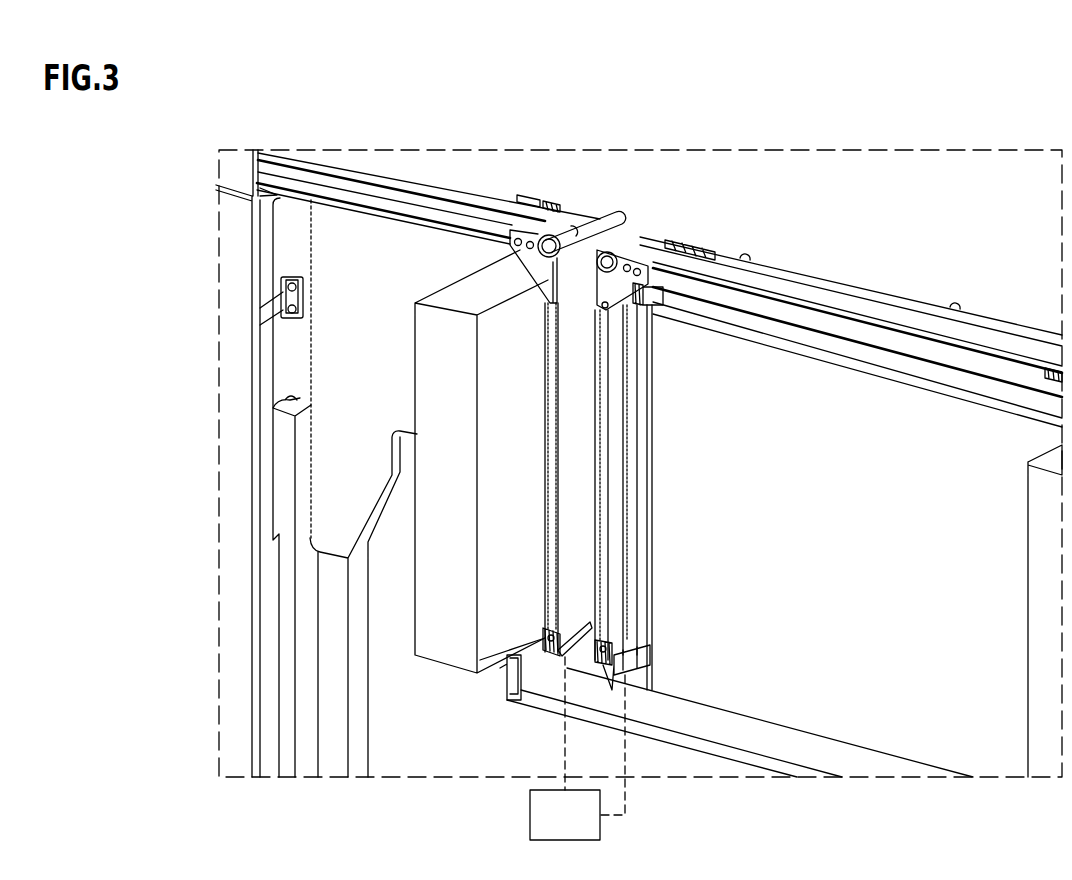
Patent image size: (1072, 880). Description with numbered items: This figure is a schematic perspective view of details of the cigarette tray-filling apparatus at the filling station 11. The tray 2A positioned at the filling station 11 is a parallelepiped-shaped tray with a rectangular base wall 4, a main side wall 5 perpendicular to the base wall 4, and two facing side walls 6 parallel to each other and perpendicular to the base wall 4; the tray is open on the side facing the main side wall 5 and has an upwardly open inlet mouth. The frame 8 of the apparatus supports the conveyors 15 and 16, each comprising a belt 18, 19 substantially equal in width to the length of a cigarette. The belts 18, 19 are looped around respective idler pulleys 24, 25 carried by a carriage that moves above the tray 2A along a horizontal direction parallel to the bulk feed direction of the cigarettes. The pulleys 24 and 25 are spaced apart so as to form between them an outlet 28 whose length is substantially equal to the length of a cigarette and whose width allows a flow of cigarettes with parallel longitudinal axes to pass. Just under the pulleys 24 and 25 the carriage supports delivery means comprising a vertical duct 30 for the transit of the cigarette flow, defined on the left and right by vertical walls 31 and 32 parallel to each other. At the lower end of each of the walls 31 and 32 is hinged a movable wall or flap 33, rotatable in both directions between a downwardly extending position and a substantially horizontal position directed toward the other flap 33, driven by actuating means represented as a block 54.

The tray at the filling station 2A is at (516, 712).
The base wall 4 is at (748, 752).
The main side wall 5 is at (846, 570).
The side walls 6 is at (538, 655).
The frame 8 is at (366, 318).
The filling station 11 is at (412, 245).
The conveyor 15 is at (490, 178).
The conveyor 16 is at (945, 290).
The belt 18 is at (325, 167).
The belt 19 is at (851, 283).
The idler pulley 24 is at (552, 235).
The idler pulley 25 is at (648, 257).
The outlet 28 is at (620, 224).
The vertical duct 30 is at (652, 483).
The vertical wall 31 is at (546, 398).
The vertical wall 32 is at (652, 383).
The movable wall or flap 33 is at (647, 663).
The actuating means 54 is at (577, 748).